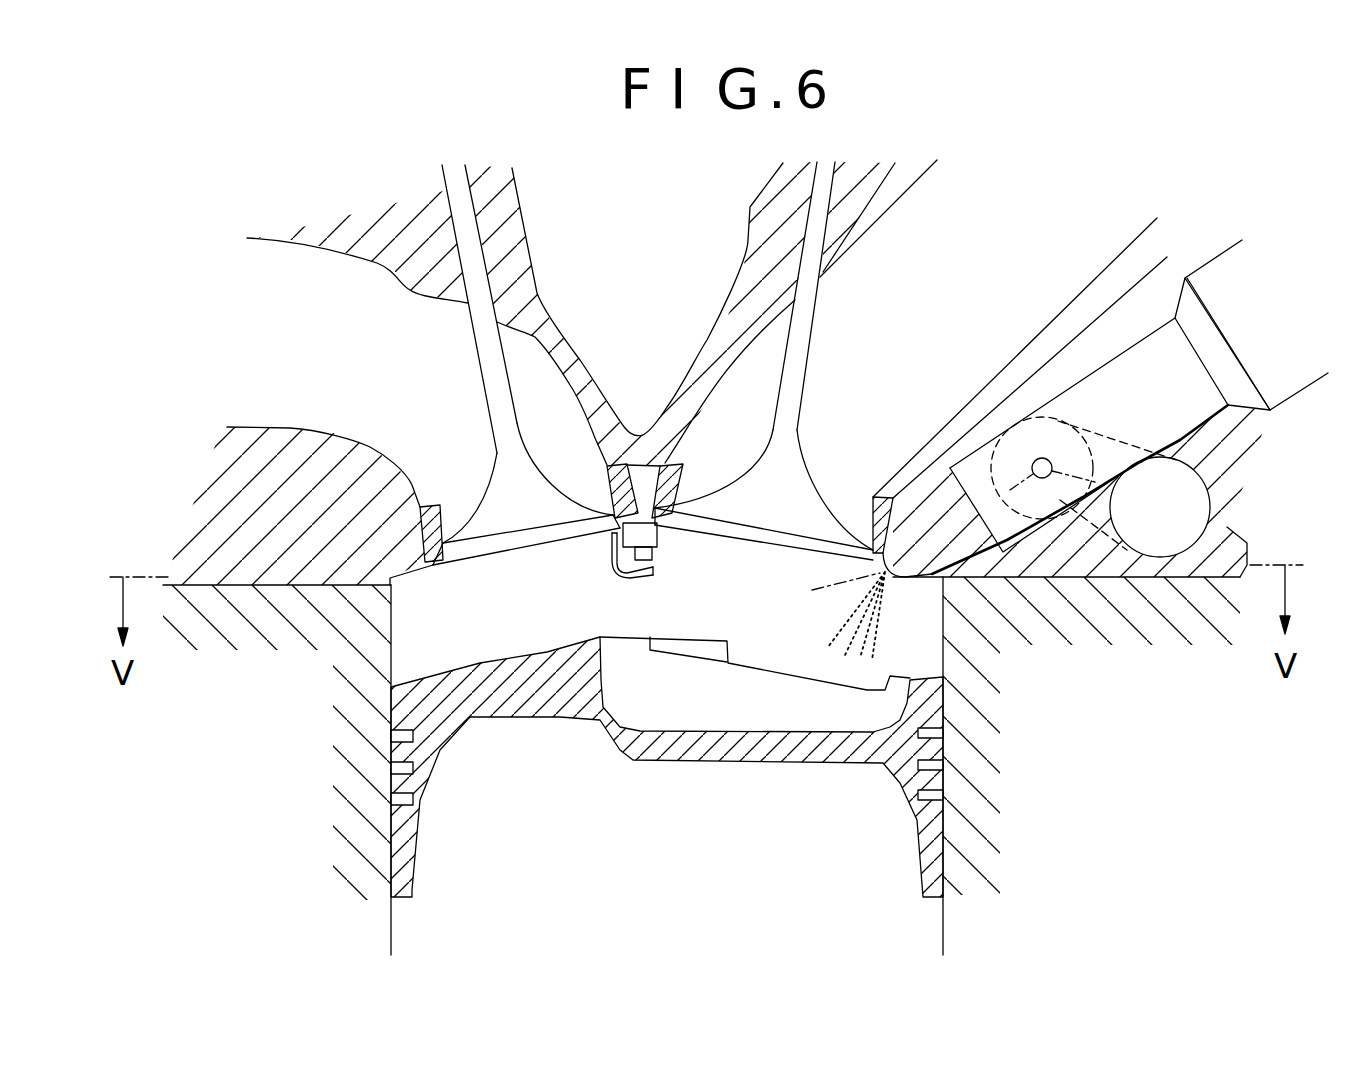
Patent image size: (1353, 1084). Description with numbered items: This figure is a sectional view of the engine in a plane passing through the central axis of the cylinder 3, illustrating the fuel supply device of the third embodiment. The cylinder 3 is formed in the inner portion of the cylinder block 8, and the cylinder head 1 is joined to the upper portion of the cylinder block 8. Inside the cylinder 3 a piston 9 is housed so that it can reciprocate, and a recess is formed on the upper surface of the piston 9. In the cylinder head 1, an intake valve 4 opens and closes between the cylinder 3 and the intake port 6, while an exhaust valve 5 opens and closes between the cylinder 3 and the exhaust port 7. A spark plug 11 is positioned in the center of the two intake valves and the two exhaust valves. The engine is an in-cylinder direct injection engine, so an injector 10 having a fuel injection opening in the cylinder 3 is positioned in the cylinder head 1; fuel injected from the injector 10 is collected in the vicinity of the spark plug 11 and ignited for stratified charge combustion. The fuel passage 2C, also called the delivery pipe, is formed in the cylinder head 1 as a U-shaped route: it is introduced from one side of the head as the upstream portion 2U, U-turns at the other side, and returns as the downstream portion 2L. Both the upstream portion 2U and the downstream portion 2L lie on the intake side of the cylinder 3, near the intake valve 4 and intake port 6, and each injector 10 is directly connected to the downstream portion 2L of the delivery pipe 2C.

The cylinder head 1 is at (247, 485).
The fuel passage 2C is at (1202, 687).
The downstream portion 2L is at (1085, 500).
The upstream portion 2U is at (1170, 555).
The cylinder 3 is at (887, 910).
The intake valve 4 is at (813, 255).
The exhaust valve 5 is at (483, 289).
The intake port 6 is at (1067, 236).
The exhaust port 7 is at (310, 358).
The cylinder block 8 is at (357, 783).
The piston 9 is at (690, 753).
The injector 10 is at (1168, 410).
The spark plug 11 is at (655, 538).